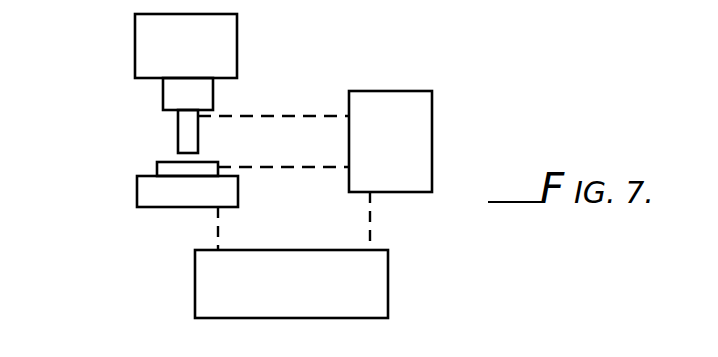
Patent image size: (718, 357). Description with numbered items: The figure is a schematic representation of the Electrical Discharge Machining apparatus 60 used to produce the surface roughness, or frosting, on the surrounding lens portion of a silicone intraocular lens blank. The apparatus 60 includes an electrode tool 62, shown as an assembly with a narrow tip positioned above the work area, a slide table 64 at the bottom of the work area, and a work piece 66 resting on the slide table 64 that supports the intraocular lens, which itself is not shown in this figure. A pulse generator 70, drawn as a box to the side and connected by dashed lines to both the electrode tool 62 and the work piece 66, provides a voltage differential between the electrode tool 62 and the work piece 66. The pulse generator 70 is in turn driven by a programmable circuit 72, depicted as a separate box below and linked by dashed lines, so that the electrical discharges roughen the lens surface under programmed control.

The Electrical Discharge Machining apparatus 60 is at (442, 58).
The electrode tool 62 is at (178, 126).
The slide table 64 is at (137, 185).
The work piece 66 is at (157, 168).
The pulse generator 70 is at (432, 118).
The programmable circuit 72 is at (388, 278).